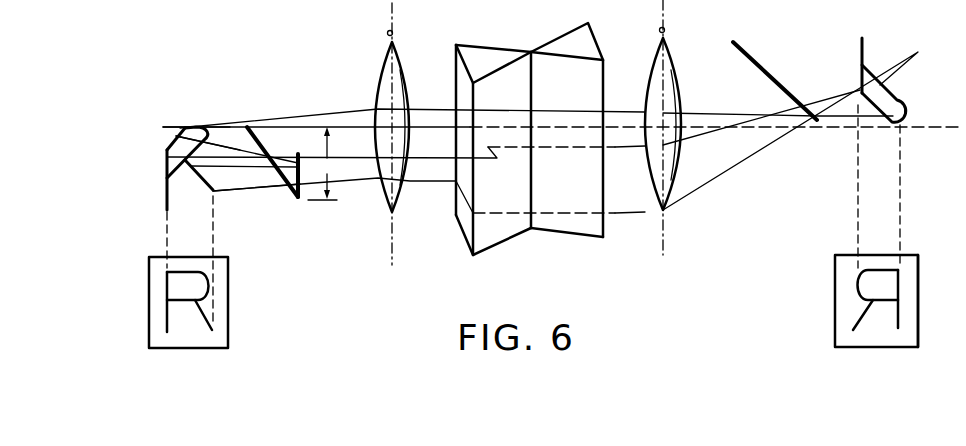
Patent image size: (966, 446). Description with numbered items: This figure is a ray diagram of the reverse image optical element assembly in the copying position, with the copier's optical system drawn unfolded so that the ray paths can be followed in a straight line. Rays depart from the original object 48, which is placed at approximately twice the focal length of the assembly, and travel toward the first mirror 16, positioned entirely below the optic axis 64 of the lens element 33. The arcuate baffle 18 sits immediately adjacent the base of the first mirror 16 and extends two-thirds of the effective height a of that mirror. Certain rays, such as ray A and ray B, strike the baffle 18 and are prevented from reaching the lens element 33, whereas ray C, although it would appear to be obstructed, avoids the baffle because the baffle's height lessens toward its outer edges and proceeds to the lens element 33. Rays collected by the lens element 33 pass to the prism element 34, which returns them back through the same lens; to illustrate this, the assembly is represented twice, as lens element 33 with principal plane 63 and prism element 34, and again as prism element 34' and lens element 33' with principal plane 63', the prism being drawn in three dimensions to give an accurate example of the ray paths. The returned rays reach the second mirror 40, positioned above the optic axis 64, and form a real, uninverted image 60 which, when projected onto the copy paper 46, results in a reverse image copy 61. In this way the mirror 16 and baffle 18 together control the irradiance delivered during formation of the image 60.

The object 48 is at (166, 192).
The optic axis 64 is at (216, 126).
The first mirror 16 is at (267, 147).
The arcuate baffle 18 is at (302, 199).
The lens element 33 is at (375, 127).
The principal plane 63 is at (411, 134).
The prism element 34 is at (493, 138).
The prism element (unfolded representation) 34' is at (566, 129).
The lens element (unfolded representation) 33' is at (648, 124).
The principal plane (unfolded representation) 63' is at (682, 127).
The second mirror 40 is at (783, 84).
The real uninverted image 60 is at (903, 98).
The copy paper 46 is at (843, 310).
The reverse image copy 61 is at (922, 321).
The ray A is at (229, 151).
The ray B is at (247, 168).
The ray C is at (273, 189).
The effective height of the mirror a is at (322, 163).